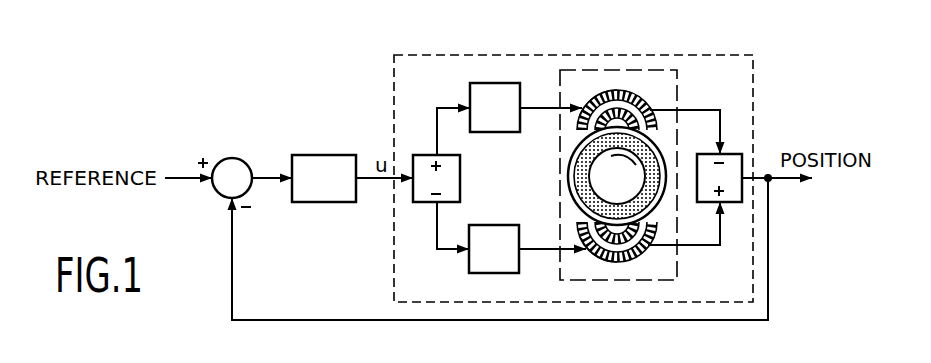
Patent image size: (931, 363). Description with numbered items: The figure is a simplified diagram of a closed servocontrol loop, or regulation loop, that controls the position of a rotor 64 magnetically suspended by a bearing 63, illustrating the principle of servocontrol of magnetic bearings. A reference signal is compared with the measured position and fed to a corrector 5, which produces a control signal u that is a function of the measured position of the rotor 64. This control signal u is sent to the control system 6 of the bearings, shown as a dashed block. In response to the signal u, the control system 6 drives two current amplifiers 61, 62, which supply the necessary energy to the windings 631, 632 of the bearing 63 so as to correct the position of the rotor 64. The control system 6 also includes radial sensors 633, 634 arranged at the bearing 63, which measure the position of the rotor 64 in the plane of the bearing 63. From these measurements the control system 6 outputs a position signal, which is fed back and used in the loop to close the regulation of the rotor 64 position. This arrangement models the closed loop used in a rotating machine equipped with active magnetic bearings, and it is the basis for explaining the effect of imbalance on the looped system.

The corrector 5 is at (338, 155).
The control system 6 is at (394, 242).
The current amplifier 61 is at (488, 126).
The current amplifier 62 is at (481, 236).
The bearing 63 is at (559, 122).
The winding 631 is at (640, 93).
The winding 632 is at (648, 257).
The radial sensor 633 is at (590, 96).
The radial sensor 634 is at (580, 234).
The rotor 64 is at (603, 171).